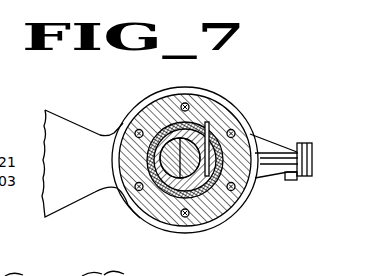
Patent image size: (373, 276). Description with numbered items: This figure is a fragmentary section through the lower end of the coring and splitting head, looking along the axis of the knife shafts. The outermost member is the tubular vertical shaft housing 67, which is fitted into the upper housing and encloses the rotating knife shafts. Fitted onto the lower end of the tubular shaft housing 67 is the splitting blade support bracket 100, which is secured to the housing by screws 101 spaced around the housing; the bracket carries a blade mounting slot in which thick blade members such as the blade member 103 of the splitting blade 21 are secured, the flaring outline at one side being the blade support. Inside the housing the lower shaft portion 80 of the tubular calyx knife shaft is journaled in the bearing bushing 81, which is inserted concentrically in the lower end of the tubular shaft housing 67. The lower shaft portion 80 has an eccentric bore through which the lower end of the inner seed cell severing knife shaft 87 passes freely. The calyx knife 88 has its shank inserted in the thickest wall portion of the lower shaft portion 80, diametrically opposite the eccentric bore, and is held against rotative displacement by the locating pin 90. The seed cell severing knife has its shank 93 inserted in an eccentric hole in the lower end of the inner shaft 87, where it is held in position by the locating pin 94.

The splitting blade support bracket 100 is at (64, 120).
The lower shaft portion 80 is at (178, 130).
The inner seed cell severing knife shaft 87 is at (160, 138).
The bearing bushing 81 is at (223, 203).
The calyx knife 88 is at (201, 130).
The tubular vertical shaft housing 67 is at (230, 194).
The shank 93 is at (177, 160).
The locating pin 90 is at (212, 128).
The screws 101 is at (190, 102).
The splitting blade 21 is at (309, 154).
The blade member 103 is at (305, 162).
The locating pin 94 is at (145, 204).